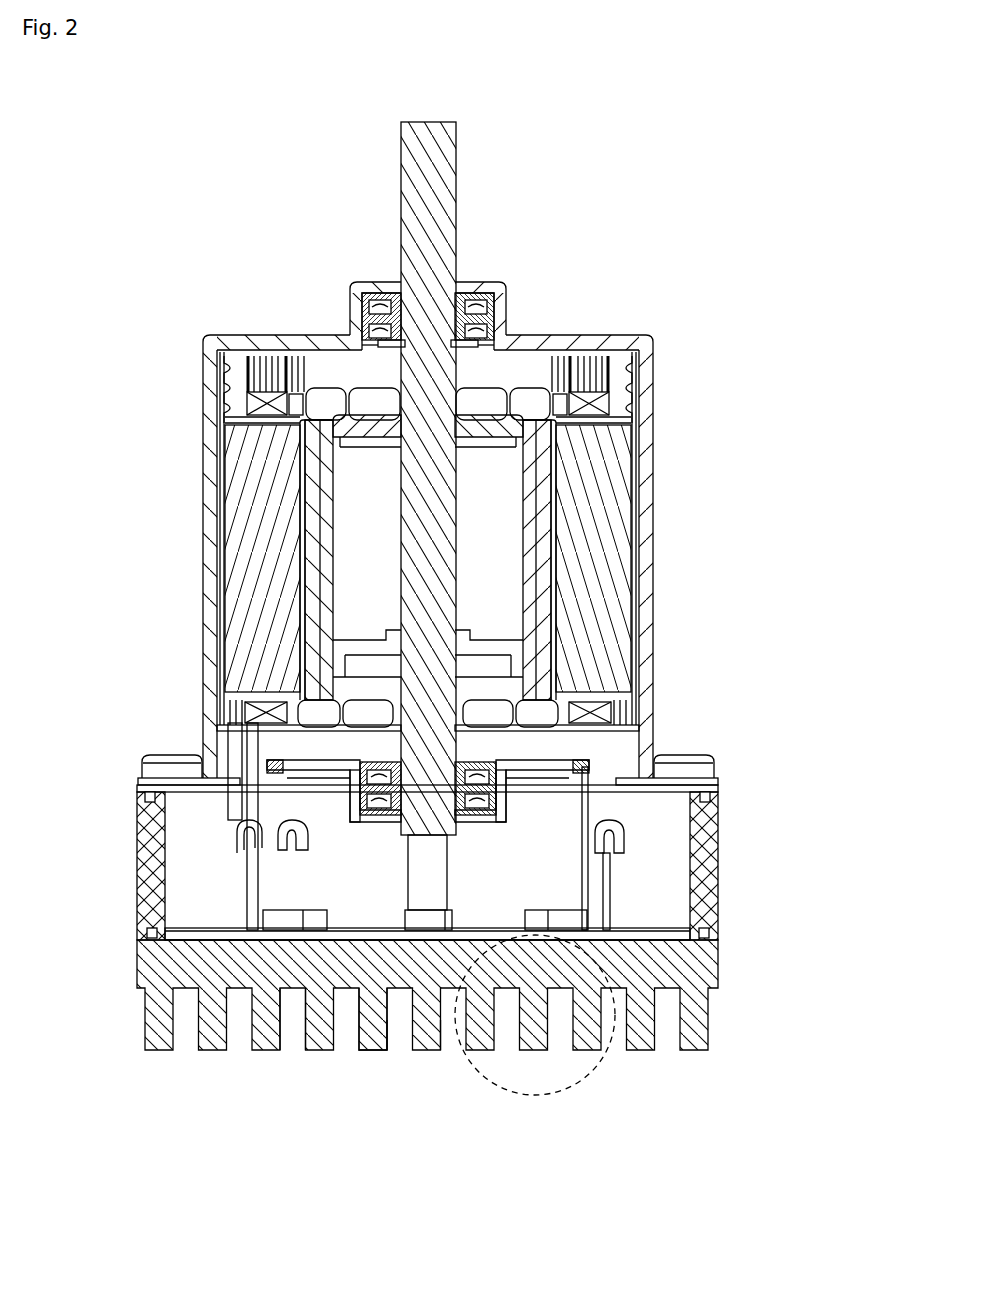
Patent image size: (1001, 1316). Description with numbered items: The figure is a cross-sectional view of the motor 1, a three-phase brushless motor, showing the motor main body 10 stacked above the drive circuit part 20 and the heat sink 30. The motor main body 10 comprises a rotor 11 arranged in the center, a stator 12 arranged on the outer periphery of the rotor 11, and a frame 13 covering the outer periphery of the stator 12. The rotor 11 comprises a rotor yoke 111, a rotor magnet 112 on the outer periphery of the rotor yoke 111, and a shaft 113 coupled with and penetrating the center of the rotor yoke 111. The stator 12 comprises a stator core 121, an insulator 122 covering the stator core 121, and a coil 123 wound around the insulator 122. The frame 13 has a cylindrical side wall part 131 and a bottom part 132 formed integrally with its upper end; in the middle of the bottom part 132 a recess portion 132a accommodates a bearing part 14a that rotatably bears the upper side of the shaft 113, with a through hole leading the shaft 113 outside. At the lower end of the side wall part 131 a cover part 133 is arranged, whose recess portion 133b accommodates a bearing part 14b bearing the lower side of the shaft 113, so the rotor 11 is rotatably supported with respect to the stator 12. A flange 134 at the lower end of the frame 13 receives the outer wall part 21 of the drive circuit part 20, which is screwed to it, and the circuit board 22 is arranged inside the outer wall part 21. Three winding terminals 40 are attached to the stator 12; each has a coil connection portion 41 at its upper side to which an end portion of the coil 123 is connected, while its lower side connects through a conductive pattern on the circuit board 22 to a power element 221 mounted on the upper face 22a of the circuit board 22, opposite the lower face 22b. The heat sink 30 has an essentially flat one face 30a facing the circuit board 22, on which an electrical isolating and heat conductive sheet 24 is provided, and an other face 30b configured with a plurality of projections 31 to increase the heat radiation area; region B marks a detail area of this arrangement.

The motor 1 is at (179, 124).
The motor main body 10 is at (727, 420).
The rotor 11 is at (662, 190).
The rotor yoke 111 is at (475, 458).
The rotor magnet 112 is at (540, 615).
The shaft 113 is at (438, 184).
The stator 12 is at (101, 373).
The stator core 121 is at (265, 473).
The insulator 122 is at (240, 412).
The coil 123 is at (232, 382).
The frame 13 is at (745, 293).
The side wall part 131 is at (668, 430).
The bottom part 132 is at (630, 338).
The recess portion 132a is at (357, 284).
The cover part 133 is at (600, 760).
The recess portion 133b is at (357, 800).
The flange 134 is at (197, 767).
The bearing part 14a is at (367, 318).
The bearing part 14b is at (363, 776).
The drive circuit part 20 is at (740, 870).
The outer wall part 21 is at (137, 906).
The circuit board 22 is at (458, 940).
The one face 22a is at (180, 933).
The lower surface of circuit board 22b is at (183, 940).
The power element 221 is at (312, 912).
The electrical isolating and heat conductive sheet 24 is at (235, 942).
The heat sink 30 is at (720, 1020).
The one face 30a is at (360, 990).
The other face 30b is at (296, 990).
The projections 31 is at (393, 1037).
The winding terminal 40 is at (442, 872).
The coil connection portion 41 is at (590, 815).
The region B is at (597, 1093).